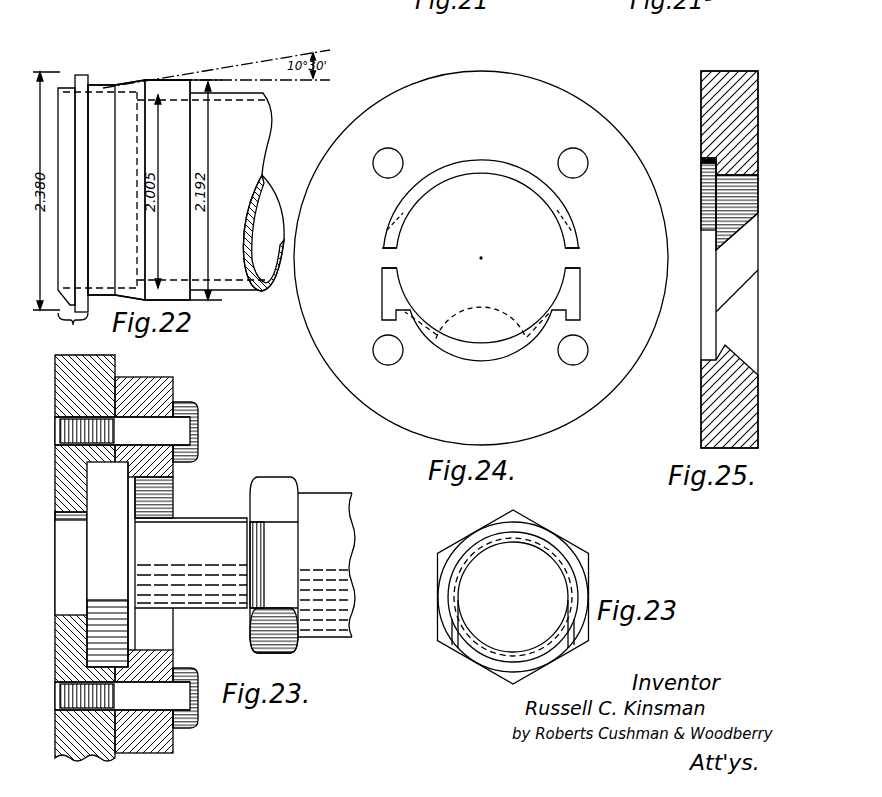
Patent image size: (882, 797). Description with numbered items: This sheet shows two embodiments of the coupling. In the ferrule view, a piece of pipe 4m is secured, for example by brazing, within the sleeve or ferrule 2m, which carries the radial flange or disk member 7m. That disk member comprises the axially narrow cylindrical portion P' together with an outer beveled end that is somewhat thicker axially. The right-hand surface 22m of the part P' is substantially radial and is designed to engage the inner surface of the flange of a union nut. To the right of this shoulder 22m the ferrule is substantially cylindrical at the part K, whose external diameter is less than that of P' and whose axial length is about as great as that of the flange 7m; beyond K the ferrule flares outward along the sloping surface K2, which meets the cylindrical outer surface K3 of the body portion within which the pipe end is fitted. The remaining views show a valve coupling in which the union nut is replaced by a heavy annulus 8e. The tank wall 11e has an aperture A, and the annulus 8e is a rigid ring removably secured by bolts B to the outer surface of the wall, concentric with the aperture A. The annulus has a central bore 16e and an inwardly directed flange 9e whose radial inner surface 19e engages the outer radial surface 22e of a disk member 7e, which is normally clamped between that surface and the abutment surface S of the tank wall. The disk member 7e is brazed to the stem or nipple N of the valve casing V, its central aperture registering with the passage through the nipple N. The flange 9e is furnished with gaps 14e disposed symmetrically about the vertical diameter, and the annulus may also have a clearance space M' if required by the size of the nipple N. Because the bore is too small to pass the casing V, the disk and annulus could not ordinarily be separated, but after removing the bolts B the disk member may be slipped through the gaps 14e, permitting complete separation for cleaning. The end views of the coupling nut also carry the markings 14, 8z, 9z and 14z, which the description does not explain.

In FIG. 22, the axially narrow cylindrical portion P' is at (66, 167).
In FIG. 22, the inner radial surface 22m is at (90, 86).
In FIG. 22, the cylindrical part K is at (98, 84).
In FIG. 22, the sloping outer surface K2 is at (127, 83).
In FIG. 22, the sleeve or ferrule 2m is at (150, 80).
In FIG. 22, the cylindrical outer surface of body portion K3 is at (174, 80).
In FIG. 22, the pipe 4m is at (253, 127).
In FIG. 22, the radial flange or disk member 7m is at (73, 331).
In FIG. 24, the annulus 8e is at (599, 137).
In FIG. 25, the annulus 8e is at (748, 121).
In FIG. 23, the annulus 8e is at (174, 388).
In FIG. 24, the central bore 16e is at (490, 190).
In FIG. 25, the central bore 16e is at (706, 188).
In FIG. 24, the slot end 14 is at (385, 258).
In FIG. 24, the gaps 14e is at (578, 258).
In FIG. 25, the gaps 14e is at (745, 256).
In FIG. 24, the clearance space M' is at (481, 341).
In FIG. 25, the clearance space M' is at (748, 383).
In FIG. 25, the inner surface of flange 19e is at (701, 160).
In FIG. 25, the inwardly directed flange 9e is at (760, 166).
In FIG. 23, the tank wall 11e is at (116, 364).
In FIG. 23, the aperture A is at (71, 563).
In FIG. 23, the bolts B is at (199, 425).
In FIG. 23, the abutment surface S is at (88, 499).
In FIG. 23, the outer radial surface 22e is at (136, 490).
In FIG. 23, the stem or nipple portion N is at (203, 535).
In FIG. 23, the disk member 7e is at (110, 548).
In FIG. 23, the valve casing V is at (318, 505).
In FIG. 23, the hexagonal nut 8z is at (562, 557).
In FIG. 23, the nut ring 9z is at (571, 587).
In FIG. 23, the nut bore 14z is at (541, 652).